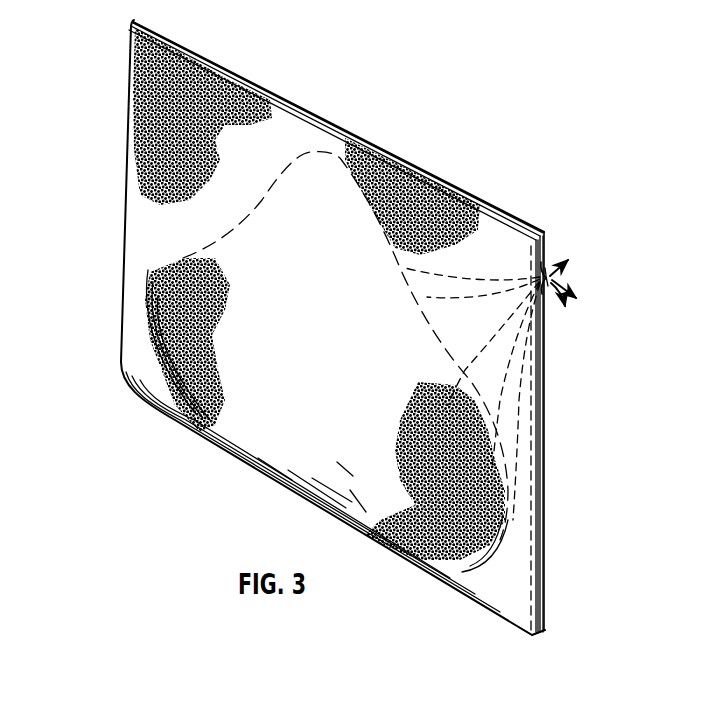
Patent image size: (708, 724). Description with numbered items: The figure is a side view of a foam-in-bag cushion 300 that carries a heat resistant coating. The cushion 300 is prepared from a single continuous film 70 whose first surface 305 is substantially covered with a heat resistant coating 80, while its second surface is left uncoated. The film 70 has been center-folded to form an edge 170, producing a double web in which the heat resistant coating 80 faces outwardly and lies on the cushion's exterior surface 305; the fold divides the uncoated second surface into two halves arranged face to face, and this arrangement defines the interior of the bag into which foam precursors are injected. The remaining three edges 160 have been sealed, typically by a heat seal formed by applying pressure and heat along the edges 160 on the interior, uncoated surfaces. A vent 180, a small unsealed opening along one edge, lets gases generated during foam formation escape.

The cushion 300 is at (333, 327).
The heat resistant coating 80 is at (216, 96).
The sealed edges 160 is at (498, 205).
The vent 180 is at (549, 276).
The film 70 is at (546, 434).
The first surface 305 is at (275, 403).
The edge formed from centerfold 170 is at (518, 640).